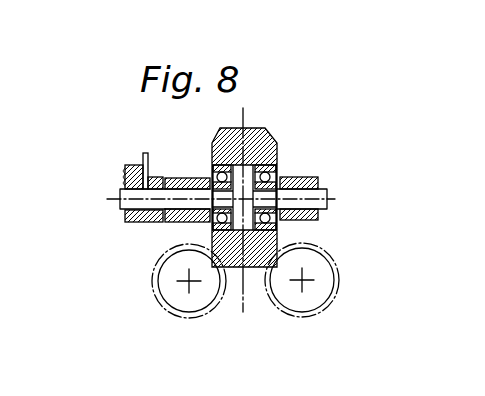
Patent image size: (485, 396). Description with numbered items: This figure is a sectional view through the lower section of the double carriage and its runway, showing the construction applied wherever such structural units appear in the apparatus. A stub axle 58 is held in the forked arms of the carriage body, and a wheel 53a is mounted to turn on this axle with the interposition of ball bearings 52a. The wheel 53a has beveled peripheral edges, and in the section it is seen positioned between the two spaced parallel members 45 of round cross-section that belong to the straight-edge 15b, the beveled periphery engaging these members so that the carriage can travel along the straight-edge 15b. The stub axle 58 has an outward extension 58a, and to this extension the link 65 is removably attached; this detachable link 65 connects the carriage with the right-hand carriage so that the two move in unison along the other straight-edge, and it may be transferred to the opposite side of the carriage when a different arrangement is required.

The outward extension 58a is at (120, 192).
The link 65 is at (130, 222).
The ball bearing 52a is at (211, 172).
The wheel 53a is at (268, 138).
The stub axle 58 is at (328, 189).
The parallel member 45 is at (163, 308).
The straight-edge 15b is at (277, 310).